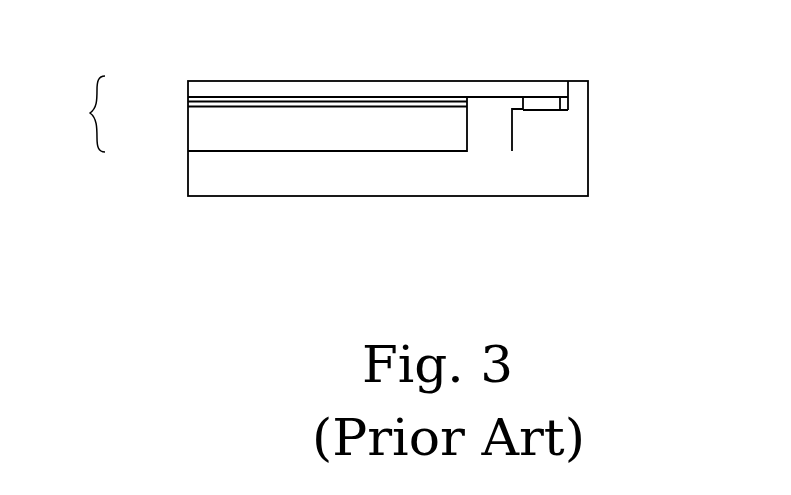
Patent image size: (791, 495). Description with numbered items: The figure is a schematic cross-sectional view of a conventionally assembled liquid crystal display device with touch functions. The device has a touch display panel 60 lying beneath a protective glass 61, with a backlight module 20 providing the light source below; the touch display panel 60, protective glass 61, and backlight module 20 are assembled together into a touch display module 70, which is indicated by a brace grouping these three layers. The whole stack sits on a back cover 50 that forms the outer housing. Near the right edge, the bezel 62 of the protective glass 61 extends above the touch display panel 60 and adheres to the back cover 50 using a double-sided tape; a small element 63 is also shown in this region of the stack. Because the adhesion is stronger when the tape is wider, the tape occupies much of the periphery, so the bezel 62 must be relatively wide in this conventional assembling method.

The backlight module 20 is at (192, 138).
The back cover 50 is at (583, 172).
The touch display panel 60 is at (188, 103).
The protective glass 61 is at (188, 88).
The bezel 62 is at (547, 81).
The electrode block 63 is at (540, 104).
The touch display module 70 is at (80, 114).